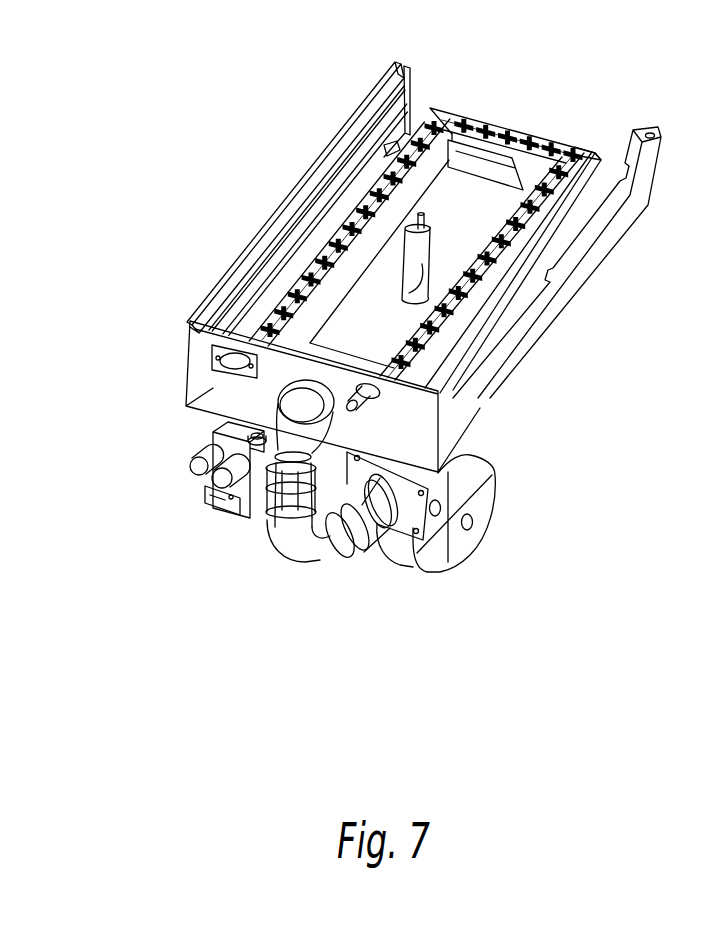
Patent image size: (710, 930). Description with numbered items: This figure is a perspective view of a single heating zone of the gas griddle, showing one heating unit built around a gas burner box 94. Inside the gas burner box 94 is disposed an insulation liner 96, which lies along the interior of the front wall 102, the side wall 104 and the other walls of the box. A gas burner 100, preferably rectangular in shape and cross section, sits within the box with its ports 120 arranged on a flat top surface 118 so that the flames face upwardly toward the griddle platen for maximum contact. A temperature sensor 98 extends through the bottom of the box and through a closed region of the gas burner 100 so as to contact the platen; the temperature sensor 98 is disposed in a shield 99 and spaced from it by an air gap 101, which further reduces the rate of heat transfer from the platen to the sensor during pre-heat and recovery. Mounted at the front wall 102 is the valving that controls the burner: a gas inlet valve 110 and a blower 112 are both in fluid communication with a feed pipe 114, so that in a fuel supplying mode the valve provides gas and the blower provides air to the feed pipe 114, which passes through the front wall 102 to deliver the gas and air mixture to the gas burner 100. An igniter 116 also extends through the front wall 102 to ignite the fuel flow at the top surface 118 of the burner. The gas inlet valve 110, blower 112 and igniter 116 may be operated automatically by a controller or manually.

The gas burner box 94 is at (327, 133).
The insulation liner 96 is at (406, 98).
The temperature sensor 98 is at (433, 203).
The shield 99 is at (405, 278).
The gas burner 100 is at (575, 151).
The air gap 101 is at (428, 217).
The front wall 102 is at (187, 405).
The side wall 104 is at (590, 252).
The gas inlet valve 110 is at (200, 480).
The blower 112 is at (438, 582).
The feed pipe 114 is at (302, 572).
The igniter 116 is at (377, 400).
The top surface 118 is at (500, 127).
The ports 120 is at (440, 119).